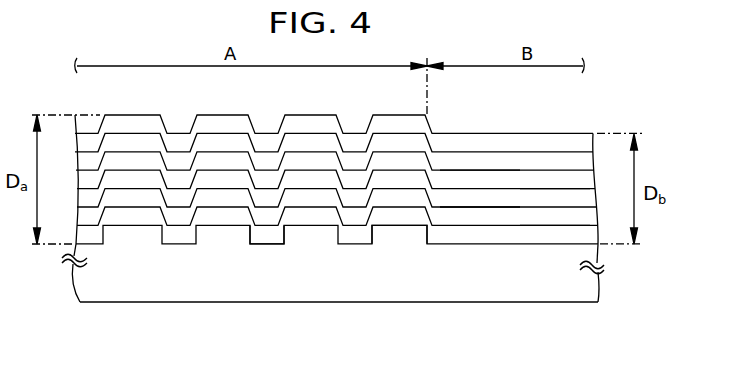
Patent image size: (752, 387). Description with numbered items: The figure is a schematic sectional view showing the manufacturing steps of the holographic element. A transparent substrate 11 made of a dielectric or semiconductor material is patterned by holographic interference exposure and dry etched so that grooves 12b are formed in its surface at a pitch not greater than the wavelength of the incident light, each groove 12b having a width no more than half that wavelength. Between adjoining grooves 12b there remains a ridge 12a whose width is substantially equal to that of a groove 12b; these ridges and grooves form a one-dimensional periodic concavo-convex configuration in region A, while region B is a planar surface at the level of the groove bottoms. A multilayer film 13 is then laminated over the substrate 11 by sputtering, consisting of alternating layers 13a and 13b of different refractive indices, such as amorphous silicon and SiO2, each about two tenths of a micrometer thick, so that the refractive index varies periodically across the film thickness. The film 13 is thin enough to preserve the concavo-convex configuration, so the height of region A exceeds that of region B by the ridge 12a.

The transparent substrate 11 is at (495, 293).
The ridge 12a is at (400, 227).
The groove 12b is at (268, 245).
The multilayer film 13 is at (593, 177).
The layer 13a is at (548, 237).
The layer 13b is at (482, 218).